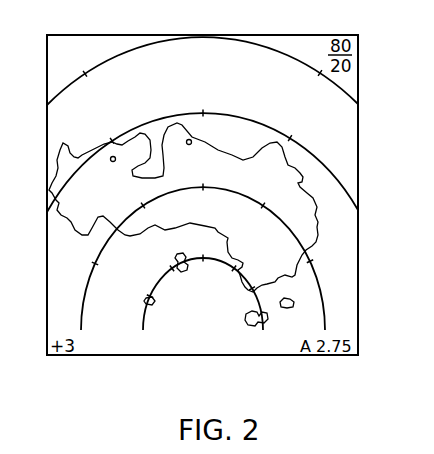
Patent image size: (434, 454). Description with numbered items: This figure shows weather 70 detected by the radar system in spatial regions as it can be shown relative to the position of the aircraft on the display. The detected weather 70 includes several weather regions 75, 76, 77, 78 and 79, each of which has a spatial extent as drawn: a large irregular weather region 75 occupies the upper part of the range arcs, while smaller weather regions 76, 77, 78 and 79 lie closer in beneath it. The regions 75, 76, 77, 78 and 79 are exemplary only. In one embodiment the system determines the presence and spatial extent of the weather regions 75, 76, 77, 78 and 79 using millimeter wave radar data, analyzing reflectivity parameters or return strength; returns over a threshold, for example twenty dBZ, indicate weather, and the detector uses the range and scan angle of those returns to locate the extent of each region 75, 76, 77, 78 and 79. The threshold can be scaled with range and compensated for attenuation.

The weather 70 is at (220, 98).
The weather region 75 is at (147, 224).
The weather region 76 is at (146, 300).
The weather region 77 is at (182, 271).
The weather region 78 is at (293, 300).
The weather region 79 is at (245, 320).